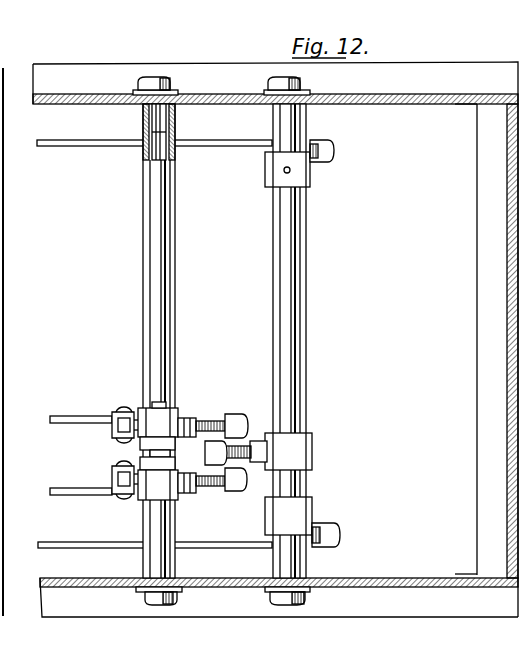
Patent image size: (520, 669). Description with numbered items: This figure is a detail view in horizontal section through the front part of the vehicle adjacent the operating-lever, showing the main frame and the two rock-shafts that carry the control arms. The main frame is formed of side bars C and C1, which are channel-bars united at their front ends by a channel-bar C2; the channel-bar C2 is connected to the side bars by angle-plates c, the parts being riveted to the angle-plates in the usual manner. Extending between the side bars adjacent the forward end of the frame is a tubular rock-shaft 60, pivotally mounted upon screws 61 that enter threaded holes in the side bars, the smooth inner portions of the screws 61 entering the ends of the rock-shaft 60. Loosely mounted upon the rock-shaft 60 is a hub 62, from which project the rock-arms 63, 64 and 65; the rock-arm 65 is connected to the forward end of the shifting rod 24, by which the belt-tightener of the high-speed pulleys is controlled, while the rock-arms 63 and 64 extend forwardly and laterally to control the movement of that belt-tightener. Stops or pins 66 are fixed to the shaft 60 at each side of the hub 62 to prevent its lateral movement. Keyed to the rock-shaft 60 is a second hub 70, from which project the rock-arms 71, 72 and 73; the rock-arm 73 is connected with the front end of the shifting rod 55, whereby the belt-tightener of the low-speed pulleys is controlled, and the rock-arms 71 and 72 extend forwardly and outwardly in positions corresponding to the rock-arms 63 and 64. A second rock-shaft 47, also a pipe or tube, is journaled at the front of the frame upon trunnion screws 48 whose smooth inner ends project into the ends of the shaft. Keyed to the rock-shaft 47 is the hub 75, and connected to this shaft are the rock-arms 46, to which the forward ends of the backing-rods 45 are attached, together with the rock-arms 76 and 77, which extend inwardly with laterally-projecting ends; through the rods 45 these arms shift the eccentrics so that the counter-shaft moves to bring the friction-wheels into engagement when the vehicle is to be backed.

The shifting rod 24 is at (81, 429).
The backing-rod 45 is at (90, 156).
The rock-arm 46 is at (311, 176).
The rock-shaft 47 is at (306, 204).
The trunnion screw 48 is at (306, 84).
The shifting rod 55 is at (76, 473).
The rock-shaft 60 is at (176, 206).
The screw 61 is at (168, 80).
The hub 62 is at (180, 418).
The rock-arm 63 is at (196, 418).
The rock-arm 64 is at (245, 418).
The rock-arm 65 is at (146, 441).
The stop pin 66 is at (152, 406).
The hub 70 is at (178, 502).
The rock-arm 71 is at (200, 493).
The rock-arm 72 is at (230, 492).
The rock-arm 73 is at (118, 488).
The hub 75 is at (313, 440).
The rock-arm 76 is at (272, 450).
The rock-arm 77 is at (250, 462).
The side bar C is at (275, 339).
The side bar C1 is at (247, 608).
The channel-bar C2 is at (495, 272).
The angle-plate c is at (473, 106).